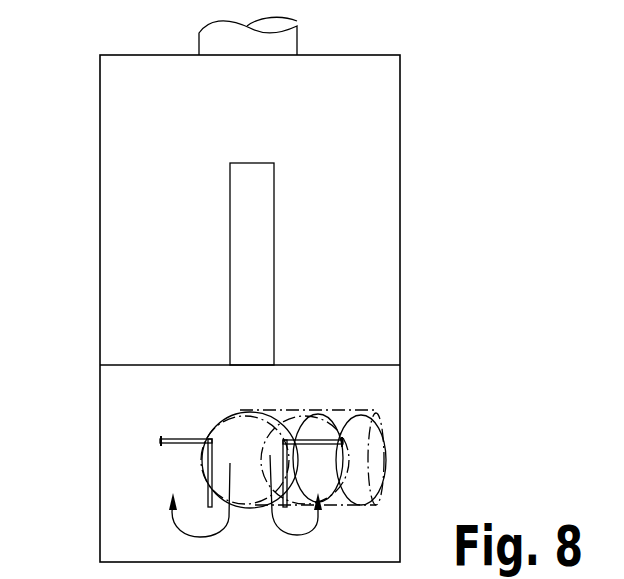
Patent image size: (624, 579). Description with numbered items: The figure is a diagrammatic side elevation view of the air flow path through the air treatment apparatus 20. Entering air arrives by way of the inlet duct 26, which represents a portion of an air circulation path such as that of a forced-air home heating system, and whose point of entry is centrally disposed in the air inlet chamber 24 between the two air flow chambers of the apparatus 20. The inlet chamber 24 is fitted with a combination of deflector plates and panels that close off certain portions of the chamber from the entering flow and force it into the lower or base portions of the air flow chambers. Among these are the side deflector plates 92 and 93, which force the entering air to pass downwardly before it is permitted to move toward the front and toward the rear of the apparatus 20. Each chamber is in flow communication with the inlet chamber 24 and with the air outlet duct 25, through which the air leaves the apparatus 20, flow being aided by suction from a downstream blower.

The apparatus 20 is at (437, 140).
The air inlet chamber 24 is at (103, 432).
The air outlet duct 25 is at (290, 46).
The inlet duct 26 is at (375, 442).
The side deflector plate 92 is at (165, 447).
The side deflector plate 93 is at (323, 440).